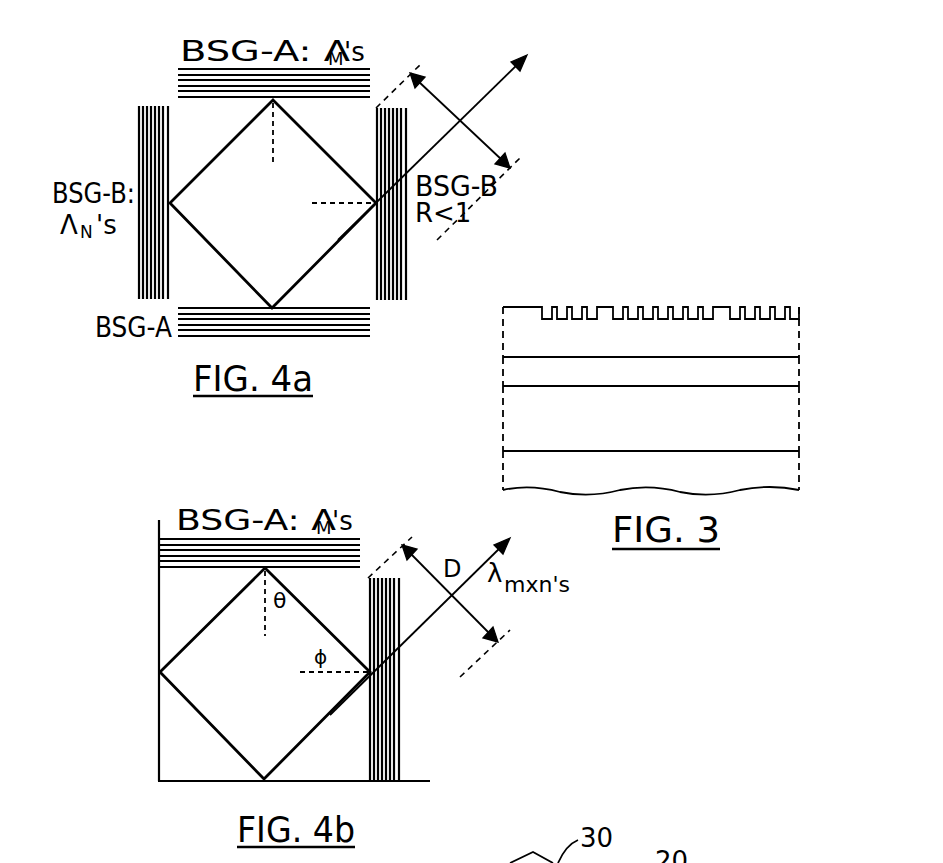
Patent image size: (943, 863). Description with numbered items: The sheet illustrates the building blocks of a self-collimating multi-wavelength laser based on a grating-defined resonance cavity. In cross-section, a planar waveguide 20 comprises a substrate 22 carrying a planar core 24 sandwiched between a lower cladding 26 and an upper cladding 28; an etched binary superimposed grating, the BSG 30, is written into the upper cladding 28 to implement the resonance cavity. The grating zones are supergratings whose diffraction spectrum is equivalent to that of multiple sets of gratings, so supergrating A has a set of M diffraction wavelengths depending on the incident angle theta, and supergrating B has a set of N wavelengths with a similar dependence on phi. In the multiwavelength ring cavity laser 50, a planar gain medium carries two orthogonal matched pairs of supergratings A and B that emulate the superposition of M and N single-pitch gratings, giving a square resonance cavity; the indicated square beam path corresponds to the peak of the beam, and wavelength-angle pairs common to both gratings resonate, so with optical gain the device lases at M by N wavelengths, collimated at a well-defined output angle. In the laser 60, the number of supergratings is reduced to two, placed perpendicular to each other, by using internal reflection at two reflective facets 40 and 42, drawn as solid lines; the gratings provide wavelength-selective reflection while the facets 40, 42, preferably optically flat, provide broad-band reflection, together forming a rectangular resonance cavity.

In FIG. 3, the planar waveguide 20 is at (824, 322).
In FIG. 3, the substrate 22 is at (778, 474).
In FIG. 3, the planar core 24 is at (512, 376).
In FIG. 3, the lower cladding 26 is at (778, 420).
In FIG. 3, the upper cladding 28 is at (502, 321).
In FIG. 3, the binary superimposed grating (BSG) 30 is at (770, 305).
In FIG. 4B, the reflective facet 40 is at (158, 624).
In FIG. 4B, the reflective facet 42 is at (218, 783).
In FIG. 4A, the multiwavelength ring cavity laser 50 is at (136, 52).
In FIG. 4B, the laser 60 is at (512, 712).